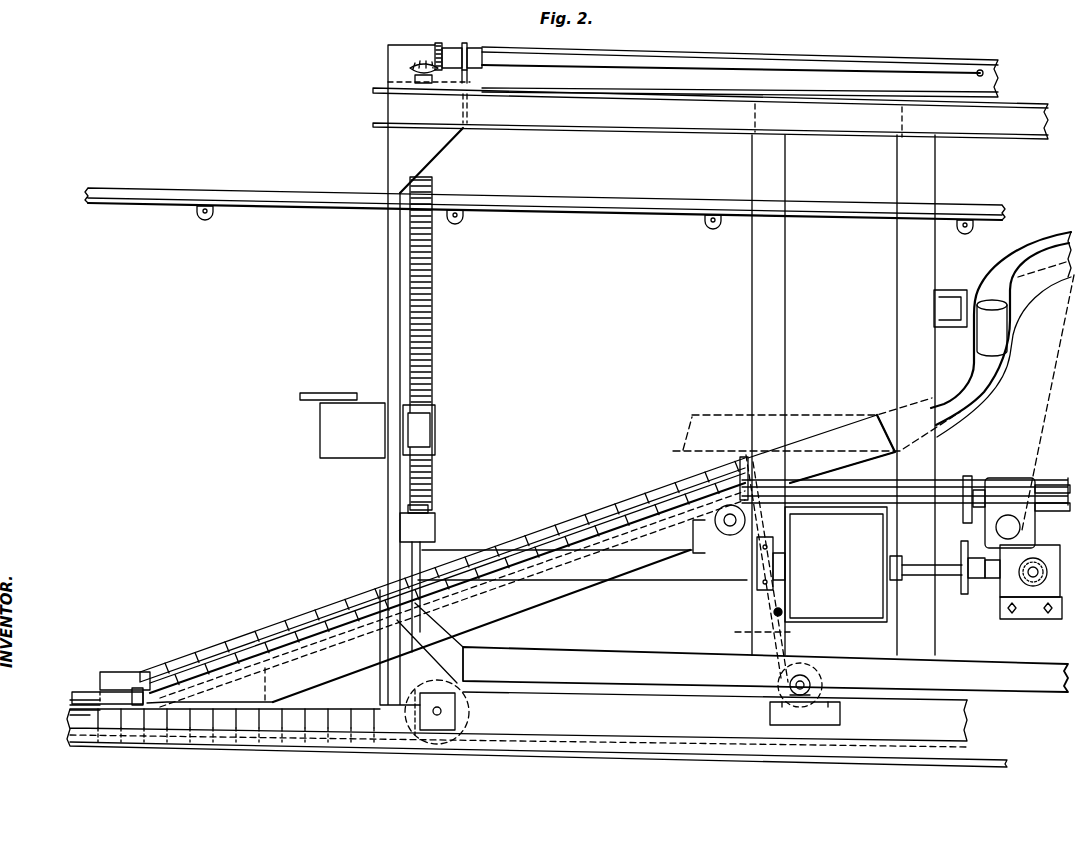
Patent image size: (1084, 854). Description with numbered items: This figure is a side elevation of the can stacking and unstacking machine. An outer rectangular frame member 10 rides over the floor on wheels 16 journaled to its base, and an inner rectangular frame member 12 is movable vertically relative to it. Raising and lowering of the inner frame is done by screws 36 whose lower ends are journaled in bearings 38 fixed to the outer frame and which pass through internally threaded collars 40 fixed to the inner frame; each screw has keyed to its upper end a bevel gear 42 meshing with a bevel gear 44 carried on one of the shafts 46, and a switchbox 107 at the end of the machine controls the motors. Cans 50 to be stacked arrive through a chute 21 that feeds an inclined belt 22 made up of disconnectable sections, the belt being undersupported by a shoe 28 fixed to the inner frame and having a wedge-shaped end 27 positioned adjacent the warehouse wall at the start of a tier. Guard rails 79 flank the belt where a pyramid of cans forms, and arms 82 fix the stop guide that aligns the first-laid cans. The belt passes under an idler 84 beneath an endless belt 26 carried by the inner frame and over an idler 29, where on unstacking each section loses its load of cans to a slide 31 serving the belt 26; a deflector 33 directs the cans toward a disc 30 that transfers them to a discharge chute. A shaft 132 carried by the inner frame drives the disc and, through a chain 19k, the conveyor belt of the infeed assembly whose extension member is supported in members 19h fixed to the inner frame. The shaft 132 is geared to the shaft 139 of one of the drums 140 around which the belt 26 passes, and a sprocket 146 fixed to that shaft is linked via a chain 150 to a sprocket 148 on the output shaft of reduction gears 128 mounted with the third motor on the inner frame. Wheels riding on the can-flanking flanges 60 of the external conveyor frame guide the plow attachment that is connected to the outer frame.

The outer rectangular frame member 10 is at (578, 117).
The inner rectangular frame member 12 is at (787, 306).
The wheels 16 is at (455, 711).
The members 19h is at (934, 316).
The chain 19k is at (1042, 400).
The chute 21 is at (980, 288).
The inclined belt 22 is at (303, 650).
The endless belt 26 is at (822, 564).
The wedge-shaped end 27 is at (222, 685).
The shoe 28 is at (541, 606).
The idler 29 is at (722, 542).
The disc 30 is at (1048, 478).
The slide 31 is at (790, 480).
The deflector 33 is at (847, 483).
The screws 36 is at (432, 326).
The bearings 38 is at (422, 526).
The internally threaded collars 40 is at (428, 430).
The bevel gear 42 is at (410, 67).
The bevel gear 44 is at (437, 45).
The shafts 46 is at (652, 62).
The cans 50 is at (320, 614).
The can-flanking flanges 60 is at (278, 200).
The guard rails 79 is at (238, 650).
The arms 82 is at (88, 688).
The idler 84 is at (815, 678).
The switchbox 107 is at (330, 430).
The reduction gears 128 is at (1000, 482).
The shaft 132 is at (1020, 620).
The shaft 139 is at (935, 575).
The drums 140 is at (785, 617).
The sprocket 146 is at (918, 563).
The sprocket 148 is at (966, 478).
The chain 150 is at (1011, 518).